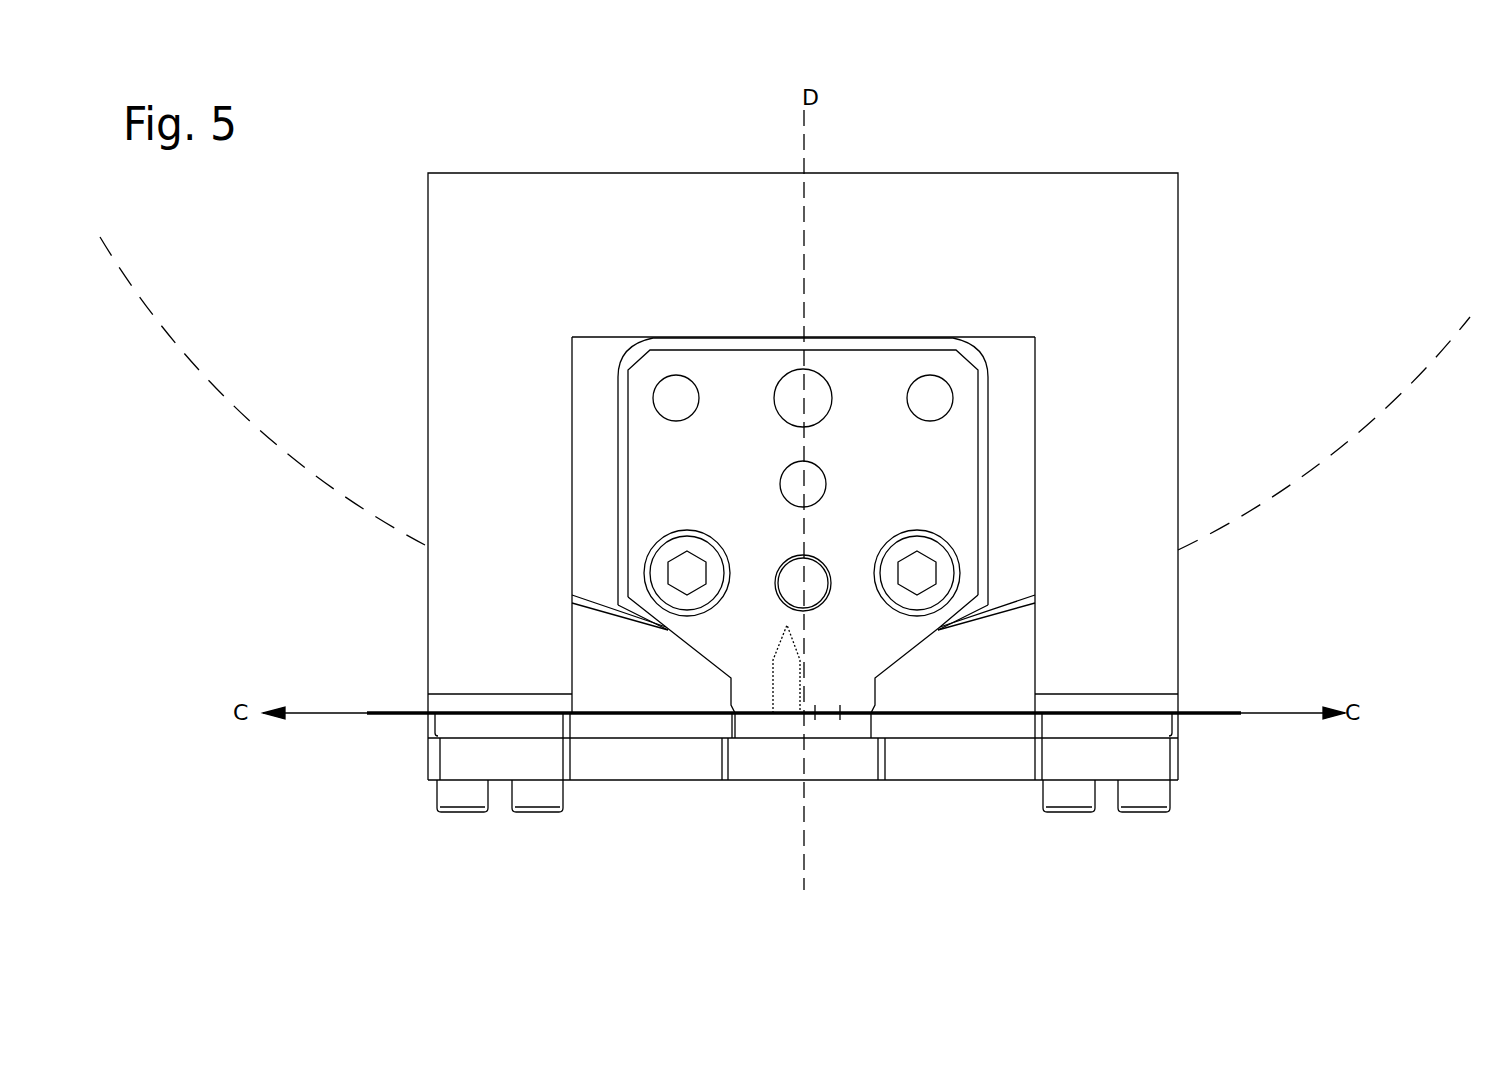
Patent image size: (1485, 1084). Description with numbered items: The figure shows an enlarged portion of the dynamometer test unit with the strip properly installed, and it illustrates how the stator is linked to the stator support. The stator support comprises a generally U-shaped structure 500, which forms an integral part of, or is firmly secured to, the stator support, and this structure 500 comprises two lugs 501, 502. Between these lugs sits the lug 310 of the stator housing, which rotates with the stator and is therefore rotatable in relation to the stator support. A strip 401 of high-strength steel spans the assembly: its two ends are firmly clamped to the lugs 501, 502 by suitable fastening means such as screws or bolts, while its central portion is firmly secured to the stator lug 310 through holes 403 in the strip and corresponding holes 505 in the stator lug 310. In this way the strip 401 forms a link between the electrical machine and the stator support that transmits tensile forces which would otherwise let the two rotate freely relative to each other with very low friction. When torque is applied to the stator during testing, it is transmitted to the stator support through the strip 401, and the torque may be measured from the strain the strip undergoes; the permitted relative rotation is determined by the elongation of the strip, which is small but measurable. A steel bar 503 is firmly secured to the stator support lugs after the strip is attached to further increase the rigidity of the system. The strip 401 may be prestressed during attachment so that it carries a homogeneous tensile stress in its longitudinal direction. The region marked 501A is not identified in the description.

The generally U-shaped structure 500 is at (1180, 220).
The lug 501 is at (500, 525).
The lug 502 is at (1106, 525).
The housing top wall 501A is at (805, 256).
The lug 310 is at (702, 630).
The strip 401 is at (683, 713).
The holes 403 is at (830, 713).
The steel bar 503 is at (1097, 767).
The holes 505 is at (787, 680).